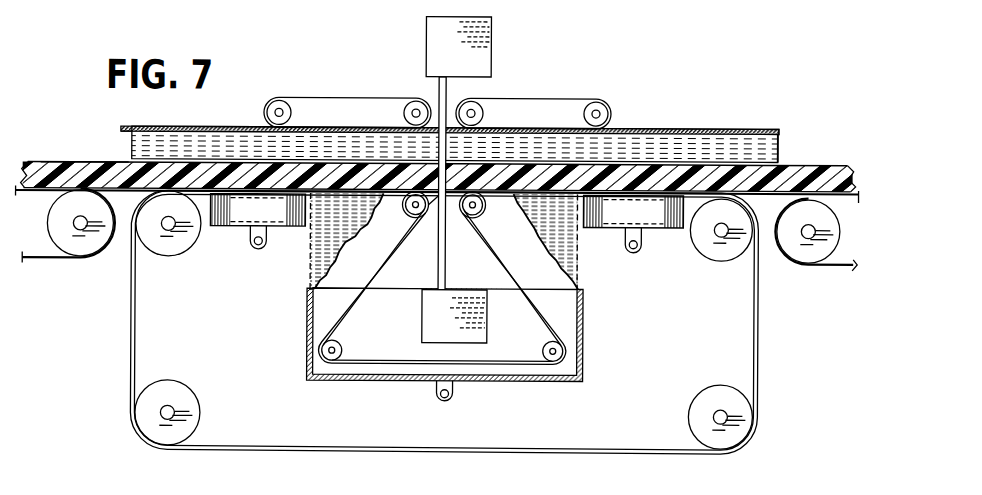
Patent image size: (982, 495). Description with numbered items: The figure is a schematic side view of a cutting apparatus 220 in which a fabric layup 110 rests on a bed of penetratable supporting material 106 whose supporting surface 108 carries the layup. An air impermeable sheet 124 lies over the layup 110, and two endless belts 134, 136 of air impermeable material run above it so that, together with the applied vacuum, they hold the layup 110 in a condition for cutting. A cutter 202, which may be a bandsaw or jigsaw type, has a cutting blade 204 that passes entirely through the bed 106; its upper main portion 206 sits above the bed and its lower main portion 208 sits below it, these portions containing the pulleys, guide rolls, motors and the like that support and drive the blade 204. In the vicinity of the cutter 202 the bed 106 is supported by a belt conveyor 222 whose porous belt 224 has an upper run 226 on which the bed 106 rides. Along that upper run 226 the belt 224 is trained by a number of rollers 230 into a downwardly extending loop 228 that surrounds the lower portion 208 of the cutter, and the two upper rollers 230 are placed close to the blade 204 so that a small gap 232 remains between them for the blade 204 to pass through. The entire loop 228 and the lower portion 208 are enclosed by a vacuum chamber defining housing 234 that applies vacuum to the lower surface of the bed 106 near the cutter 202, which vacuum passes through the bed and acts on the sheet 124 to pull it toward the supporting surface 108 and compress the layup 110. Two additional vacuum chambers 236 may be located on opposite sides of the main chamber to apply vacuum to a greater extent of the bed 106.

The bed of penetratable supporting material 106 is at (73, 164).
The supporting surface 108 is at (94, 163).
The fabric layup 110 is at (778, 155).
The air impermeable sheet 124 is at (683, 128).
The endless belt 134 is at (337, 98).
The endless belt 136 is at (530, 98).
The cutter 202 is at (507, 22).
The cutting blade 204 is at (437, 90).
The upper main portion of cutter 206 is at (425, 32).
The lower main portion of cutter 208 is at (488, 325).
The apparatus 220 is at (586, 56).
The belt conveyor 222 is at (115, 296).
The belt 224 is at (136, 312).
The upper run 226 is at (197, 240).
The downwardly extending loop 228 is at (524, 290).
The rollers 230 is at (408, 214).
The gap 232 is at (435, 200).
The vacuum chamber defining means or housing 234 is at (583, 323).
The additional vacuum chambers 236 is at (287, 229).